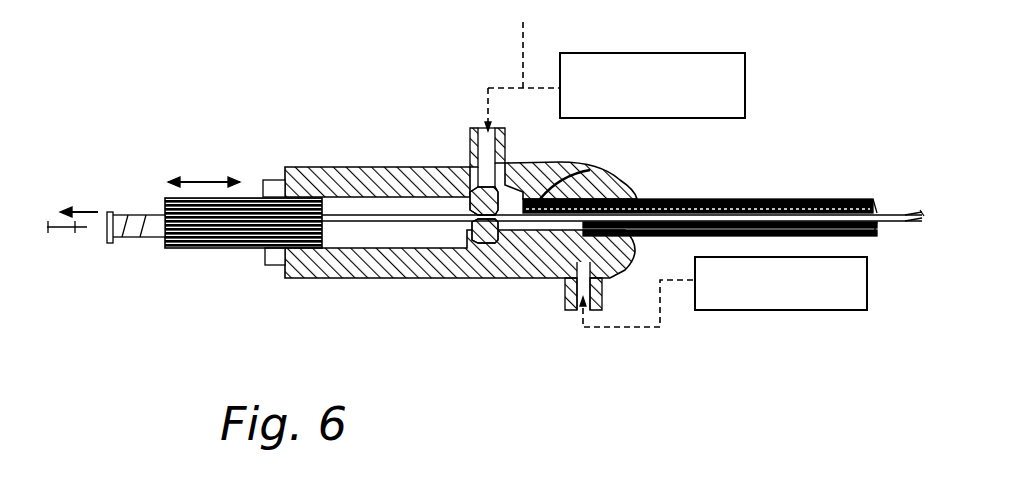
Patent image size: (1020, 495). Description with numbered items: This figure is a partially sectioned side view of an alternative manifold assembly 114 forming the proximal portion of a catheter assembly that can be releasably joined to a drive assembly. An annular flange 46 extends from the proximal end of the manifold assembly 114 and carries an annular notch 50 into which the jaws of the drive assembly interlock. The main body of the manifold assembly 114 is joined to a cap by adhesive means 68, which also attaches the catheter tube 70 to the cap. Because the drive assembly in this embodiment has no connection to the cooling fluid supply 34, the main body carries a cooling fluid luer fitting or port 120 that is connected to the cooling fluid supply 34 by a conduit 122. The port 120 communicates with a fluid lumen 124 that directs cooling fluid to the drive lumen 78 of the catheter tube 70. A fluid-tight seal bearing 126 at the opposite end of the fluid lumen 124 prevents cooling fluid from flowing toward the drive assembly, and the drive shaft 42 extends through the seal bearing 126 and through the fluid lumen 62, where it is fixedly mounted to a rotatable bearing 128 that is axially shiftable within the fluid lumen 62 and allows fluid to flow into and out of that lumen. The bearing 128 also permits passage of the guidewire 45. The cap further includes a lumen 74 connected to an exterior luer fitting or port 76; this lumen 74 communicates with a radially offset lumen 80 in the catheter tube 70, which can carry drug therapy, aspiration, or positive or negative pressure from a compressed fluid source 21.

The rotatable bearing 128 is at (163, 197).
The annular flange 46 is at (265, 180).
The drive shaft 42 is at (346, 204).
The manifold assembly 114 is at (312, 133).
The fluid-tight seal bearing 126 is at (447, 183).
The cooling fluid luer fitting or port 120 is at (468, 132).
The conduit 122 is at (526, 67).
The cooling fluid supply 34 is at (675, 52).
The adhesive means 68 is at (588, 162).
The catheter tube 70 is at (790, 198).
The drive lumen 78 is at (878, 200).
The lumen 80 is at (650, 238).
The guidewire 45 is at (52, 233).
The annular notch 50 is at (270, 262).
The fluid lumen 62 is at (393, 278).
The fluid lumen 124 is at (504, 278).
The lumen 74 is at (565, 282).
The luer fitting or port 76 is at (603, 296).
The compressed fluid source 21 is at (836, 312).